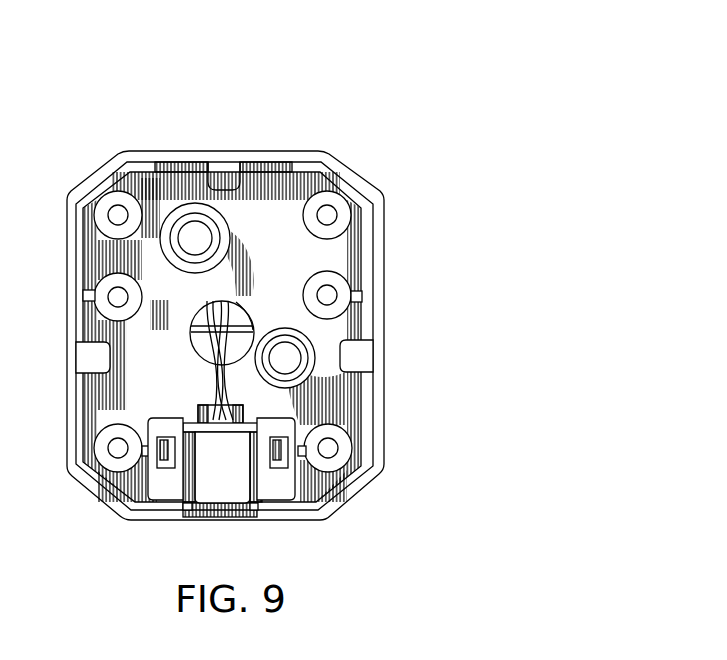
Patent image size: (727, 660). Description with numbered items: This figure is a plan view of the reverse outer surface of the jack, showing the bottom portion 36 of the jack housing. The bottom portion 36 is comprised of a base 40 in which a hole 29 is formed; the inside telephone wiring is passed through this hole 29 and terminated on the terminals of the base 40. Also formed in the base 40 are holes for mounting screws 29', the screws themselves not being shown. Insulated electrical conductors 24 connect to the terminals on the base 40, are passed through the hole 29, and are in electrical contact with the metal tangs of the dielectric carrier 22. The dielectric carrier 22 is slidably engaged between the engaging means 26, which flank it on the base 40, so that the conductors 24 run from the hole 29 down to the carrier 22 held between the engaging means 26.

The bottom portion 36 is at (396, 138).
The base 40 is at (293, 246).
The holes for mounting screws 29' is at (289, 251).
The hole 29 is at (209, 327).
The insulated electrical conductors 24 is at (240, 318).
The dielectric carrier 22 is at (243, 474).
The engaging means 26 is at (170, 490).